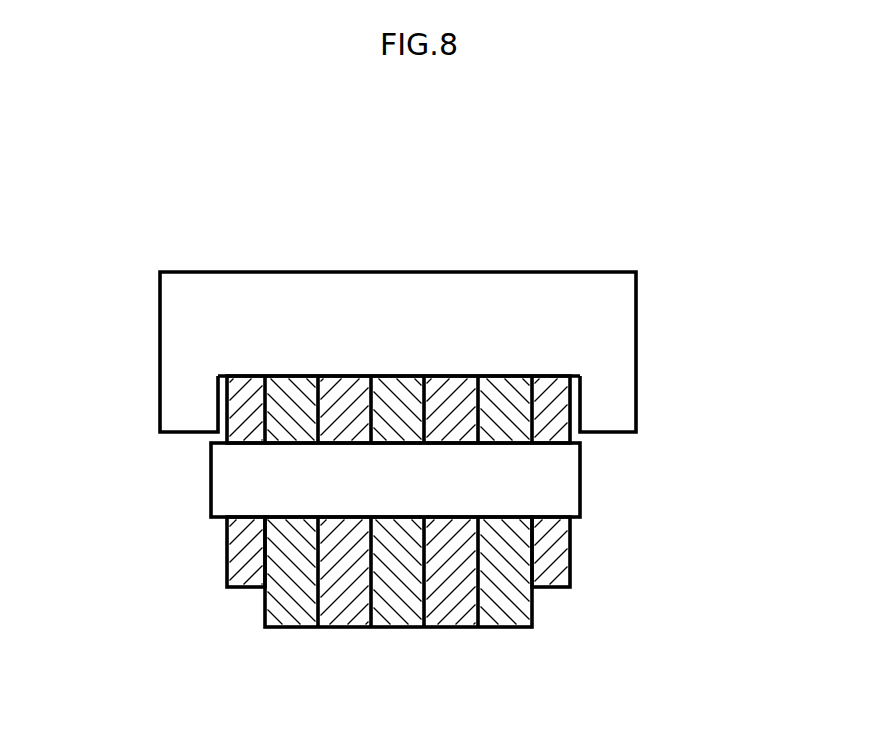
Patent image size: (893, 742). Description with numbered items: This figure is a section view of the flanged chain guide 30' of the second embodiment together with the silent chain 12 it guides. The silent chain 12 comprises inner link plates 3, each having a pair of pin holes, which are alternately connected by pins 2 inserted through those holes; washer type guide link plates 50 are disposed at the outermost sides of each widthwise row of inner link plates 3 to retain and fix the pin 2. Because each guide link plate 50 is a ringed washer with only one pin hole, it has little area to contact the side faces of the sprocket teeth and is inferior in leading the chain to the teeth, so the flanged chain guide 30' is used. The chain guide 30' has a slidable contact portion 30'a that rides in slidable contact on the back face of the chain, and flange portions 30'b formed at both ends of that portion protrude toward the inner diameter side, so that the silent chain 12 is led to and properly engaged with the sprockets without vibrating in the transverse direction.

The flanged chain guide 30' is at (397, 320).
The slidable contact portion 30'a is at (439, 337).
The flange portions 30'b is at (397, 415).
The pin 2 is at (218, 483).
The silent chain 12 is at (617, 486).
The guide link plate 50 is at (558, 567).
The inner link plates 3 is at (532, 637).